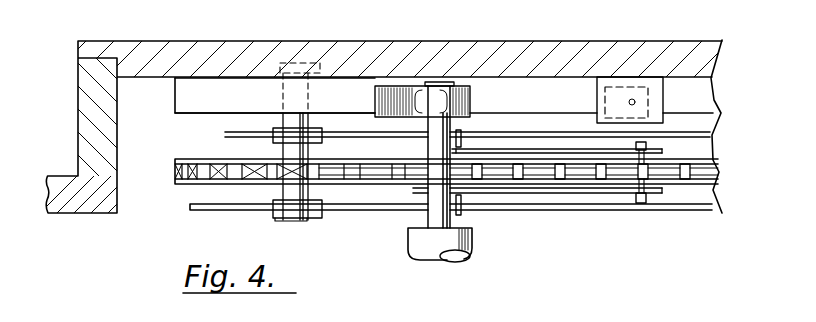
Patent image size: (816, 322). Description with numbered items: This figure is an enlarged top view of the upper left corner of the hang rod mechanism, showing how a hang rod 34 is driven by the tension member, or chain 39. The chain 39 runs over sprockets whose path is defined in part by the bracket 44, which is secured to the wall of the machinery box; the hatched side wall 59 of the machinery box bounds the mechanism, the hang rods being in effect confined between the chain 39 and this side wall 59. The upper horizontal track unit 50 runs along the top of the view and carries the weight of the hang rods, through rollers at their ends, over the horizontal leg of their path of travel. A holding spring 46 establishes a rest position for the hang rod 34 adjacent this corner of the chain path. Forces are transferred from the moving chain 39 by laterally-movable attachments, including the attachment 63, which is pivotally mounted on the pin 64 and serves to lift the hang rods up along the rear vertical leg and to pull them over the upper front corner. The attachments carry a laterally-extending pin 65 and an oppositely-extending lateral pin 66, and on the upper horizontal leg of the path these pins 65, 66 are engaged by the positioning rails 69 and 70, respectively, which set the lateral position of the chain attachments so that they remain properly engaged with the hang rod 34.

The hang rod 34 is at (472, 243).
The chain 39 is at (185, 183).
The bracket 44 is at (349, 212).
The holding spring 46 is at (542, 92).
The upper horizontal track unit 50 is at (192, 108).
The side wall 59 is at (118, 188).
The laterally-movable attachment 63 is at (580, 193).
The pin 64 is at (642, 205).
The laterally-extending pin 65 is at (461, 131).
The lateral pin 66 is at (462, 213).
The positioning rail 69 is at (533, 133).
The positioning rail 70 is at (548, 211).